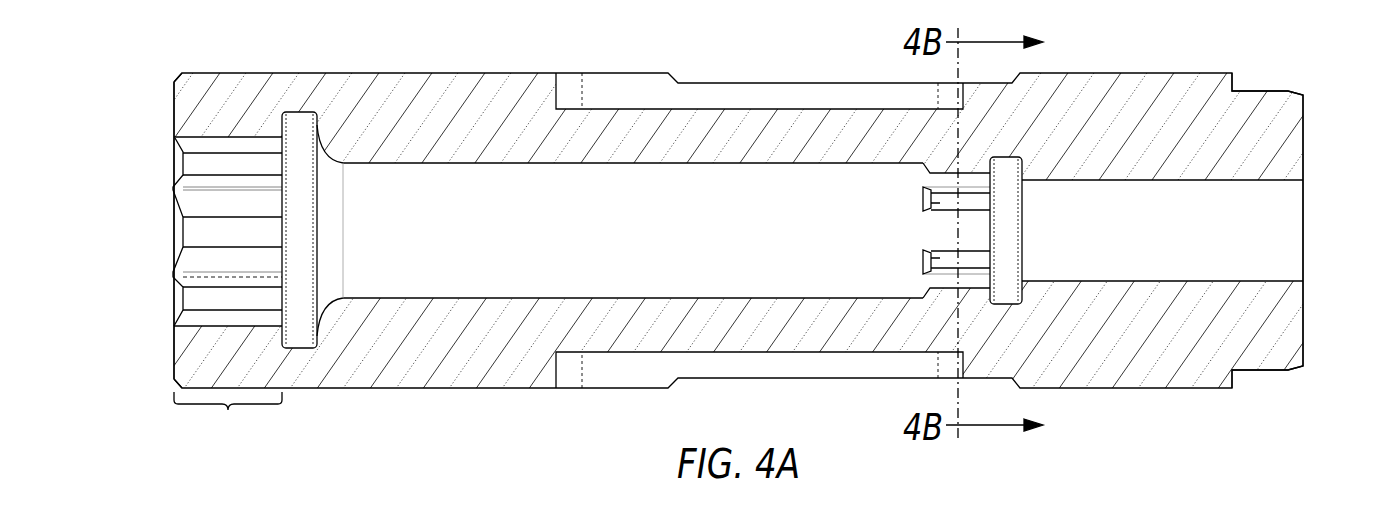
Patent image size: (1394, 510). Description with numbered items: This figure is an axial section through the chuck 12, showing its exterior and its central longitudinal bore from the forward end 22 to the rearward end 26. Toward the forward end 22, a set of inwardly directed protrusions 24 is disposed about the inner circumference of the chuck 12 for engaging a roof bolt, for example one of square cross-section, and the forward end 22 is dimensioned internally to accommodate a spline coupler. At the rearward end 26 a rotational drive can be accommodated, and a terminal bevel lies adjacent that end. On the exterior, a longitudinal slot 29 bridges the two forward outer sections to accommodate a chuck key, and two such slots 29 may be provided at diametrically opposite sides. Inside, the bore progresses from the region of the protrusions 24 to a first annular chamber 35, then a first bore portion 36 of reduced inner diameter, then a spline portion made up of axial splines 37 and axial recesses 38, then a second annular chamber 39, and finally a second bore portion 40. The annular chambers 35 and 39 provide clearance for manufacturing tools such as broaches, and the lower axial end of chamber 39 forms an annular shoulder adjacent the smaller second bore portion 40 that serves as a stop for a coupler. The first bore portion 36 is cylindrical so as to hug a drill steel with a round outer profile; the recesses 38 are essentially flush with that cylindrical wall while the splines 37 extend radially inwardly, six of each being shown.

The chuck 12 is at (409, 403).
The forward end 22 is at (173, 106).
The protrusions 24 is at (227, 292).
The rearward end 26 is at (1303, 122).
The longitudinal slot 29 is at (632, 90).
The first annular chamber 35 is at (300, 122).
The first bore portion 36 is at (465, 192).
The axial splines 37 is at (924, 204).
The axial recesses 38 is at (937, 181).
The second annular chamber 39 is at (1007, 173).
The second bore portion 40 is at (1255, 243).